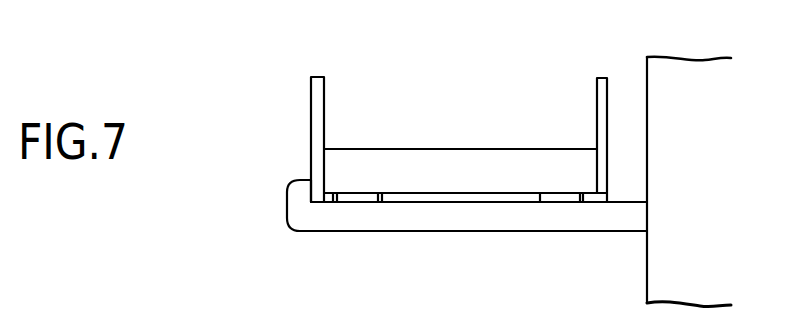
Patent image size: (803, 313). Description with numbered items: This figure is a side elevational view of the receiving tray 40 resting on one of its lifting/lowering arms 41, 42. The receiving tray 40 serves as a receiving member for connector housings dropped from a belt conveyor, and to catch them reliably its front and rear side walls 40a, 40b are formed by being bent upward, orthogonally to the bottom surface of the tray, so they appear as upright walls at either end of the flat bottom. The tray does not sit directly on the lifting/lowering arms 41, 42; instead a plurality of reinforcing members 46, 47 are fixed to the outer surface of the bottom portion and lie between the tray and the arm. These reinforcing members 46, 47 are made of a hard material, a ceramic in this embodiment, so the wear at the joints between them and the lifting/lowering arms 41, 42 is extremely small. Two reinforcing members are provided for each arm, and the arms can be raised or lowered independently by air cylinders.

The receiving tray 40 is at (433, 113).
The front side wall 40a is at (317, 139).
The rear side wall 40b is at (602, 140).
The lifting/lowering arm 41 is at (463, 217).
The lifting/lowering arm 42 is at (467, 240).
The reinforcing member 46 is at (358, 195).
The reinforcing member 47 is at (475, 237).